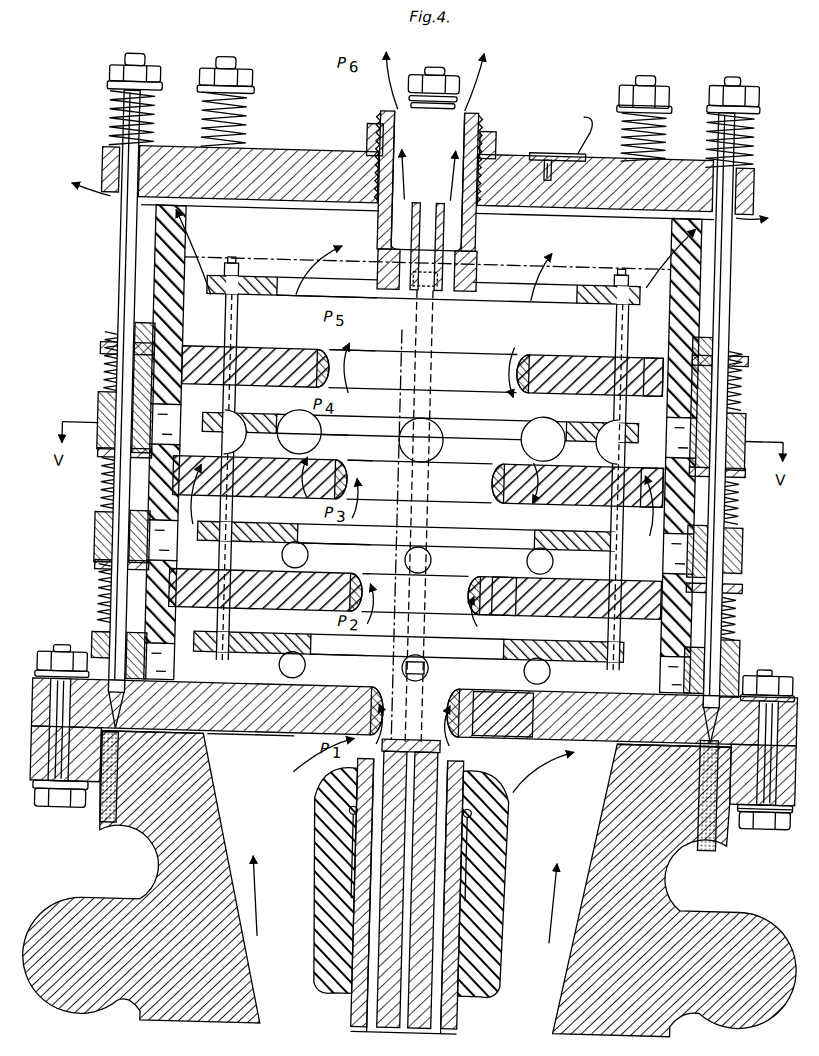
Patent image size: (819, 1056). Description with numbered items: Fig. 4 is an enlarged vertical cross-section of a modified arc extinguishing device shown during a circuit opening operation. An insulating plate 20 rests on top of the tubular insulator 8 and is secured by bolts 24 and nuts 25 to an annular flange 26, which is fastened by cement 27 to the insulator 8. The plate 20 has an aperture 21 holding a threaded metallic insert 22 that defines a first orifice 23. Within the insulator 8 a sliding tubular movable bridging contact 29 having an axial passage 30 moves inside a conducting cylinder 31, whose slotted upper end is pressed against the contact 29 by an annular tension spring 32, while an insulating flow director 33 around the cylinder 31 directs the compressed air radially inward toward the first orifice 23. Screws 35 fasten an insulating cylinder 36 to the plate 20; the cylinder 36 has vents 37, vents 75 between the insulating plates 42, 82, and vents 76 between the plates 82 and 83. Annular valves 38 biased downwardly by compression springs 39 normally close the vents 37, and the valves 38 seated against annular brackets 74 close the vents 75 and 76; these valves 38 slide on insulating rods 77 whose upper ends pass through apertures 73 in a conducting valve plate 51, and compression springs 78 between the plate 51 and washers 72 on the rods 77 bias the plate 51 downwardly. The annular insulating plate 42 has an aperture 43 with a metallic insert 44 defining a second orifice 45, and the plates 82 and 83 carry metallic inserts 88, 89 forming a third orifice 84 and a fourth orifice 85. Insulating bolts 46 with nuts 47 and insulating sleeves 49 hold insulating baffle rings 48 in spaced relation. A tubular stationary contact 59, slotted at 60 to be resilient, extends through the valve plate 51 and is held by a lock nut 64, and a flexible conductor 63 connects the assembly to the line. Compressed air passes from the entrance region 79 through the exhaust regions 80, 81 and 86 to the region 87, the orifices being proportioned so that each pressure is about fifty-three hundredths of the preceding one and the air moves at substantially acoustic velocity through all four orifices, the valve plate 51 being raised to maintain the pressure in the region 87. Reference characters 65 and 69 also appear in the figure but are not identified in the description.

The tubular insulator 8 is at (742, 1020).
The insulating plate 20 is at (554, 685).
The aperture 21 is at (476, 687).
The metallic insert 22 is at (460, 726).
The first orifice 23 is at (462, 692).
The bolts 24 is at (62, 816).
The nuts 25 is at (54, 654).
The annular flange 26 is at (736, 831).
The cement 27 is at (718, 842).
The sliding tubular movable bridging contact 29 is at (440, 1032).
The axial passage 30 is at (414, 1031).
The conducting cylinder 31 is at (446, 1017).
The annular tension spring 32 is at (480, 814).
The insulating flow director 33 is at (514, 865).
The screws 35 is at (590, 642).
The insulating cylinder 36 is at (178, 245).
The vents 37 is at (190, 664).
The annular valve 38 is at (744, 414).
The compression springs 39 is at (736, 377).
The annular insulating plate 42 is at (564, 575).
The aperture 43 is at (496, 575).
The metallic insert 44 is at (486, 618).
The second orifice 45 is at (470, 575).
The insulating bolts 46 is at (229, 266).
The nuts 47 is at (217, 273).
The insulating baffle rings 48 is at (262, 283).
The insulating sleeves 49 is at (233, 337).
The conducting valve plate 51 is at (348, 166).
The tubular stationary contact 59 is at (470, 246).
The slot 60 is at (431, 188).
The flexible conductor 63 is at (574, 126).
The lock nut 64 is at (358, 130).
The axis 65 is at (395, 337).
The outlet 69 is at (410, 51).
The washers 72 is at (190, 92).
The apertures 73 is at (102, 155).
The annular brackets 74 is at (742, 464).
The vents 75 is at (198, 562).
The vents 76 is at (519, 440).
The insulating rods 77 is at (132, 60).
The compression springs 78 is at (146, 120).
The entrance region 79 is at (322, 784).
The exhaust region 80 is at (352, 655).
The exhaust region 81 is at (346, 565).
The insulating plate 82 is at (578, 502).
The insulating plate 83 is at (580, 357).
The third orifice 84 is at (493, 501).
The fourth orifice 85 is at (512, 359).
The exhaust region 86 is at (350, 450).
The exhaust region 87 is at (296, 326).
The metallic insert 88 is at (540, 353).
The metallic insert 89 is at (550, 502).